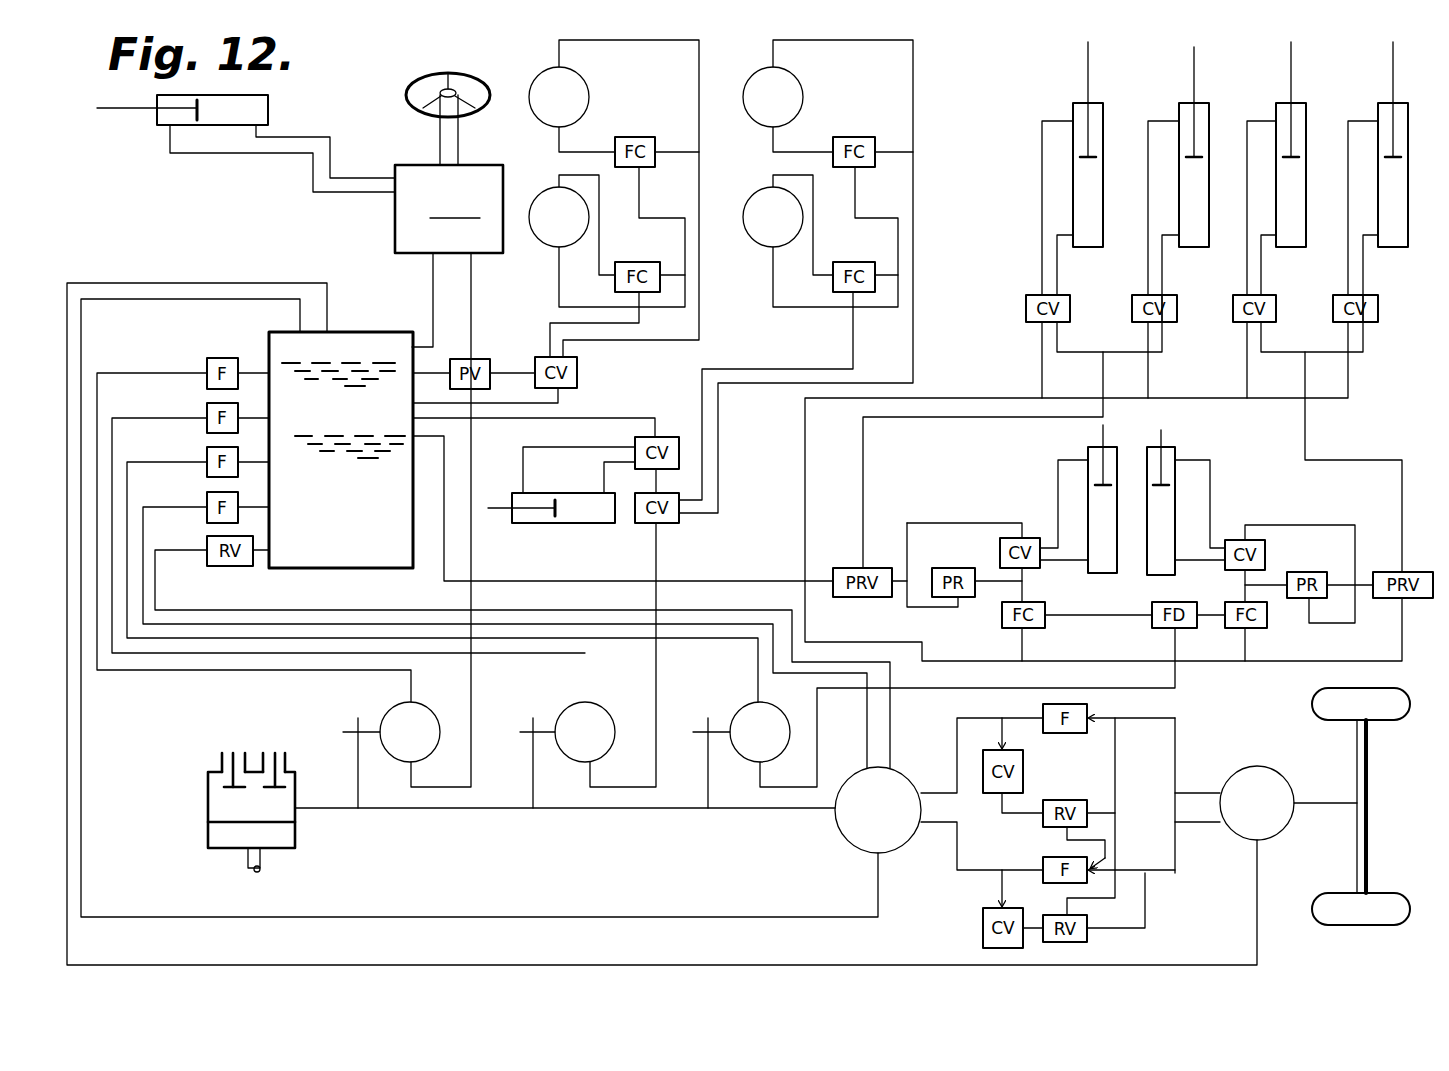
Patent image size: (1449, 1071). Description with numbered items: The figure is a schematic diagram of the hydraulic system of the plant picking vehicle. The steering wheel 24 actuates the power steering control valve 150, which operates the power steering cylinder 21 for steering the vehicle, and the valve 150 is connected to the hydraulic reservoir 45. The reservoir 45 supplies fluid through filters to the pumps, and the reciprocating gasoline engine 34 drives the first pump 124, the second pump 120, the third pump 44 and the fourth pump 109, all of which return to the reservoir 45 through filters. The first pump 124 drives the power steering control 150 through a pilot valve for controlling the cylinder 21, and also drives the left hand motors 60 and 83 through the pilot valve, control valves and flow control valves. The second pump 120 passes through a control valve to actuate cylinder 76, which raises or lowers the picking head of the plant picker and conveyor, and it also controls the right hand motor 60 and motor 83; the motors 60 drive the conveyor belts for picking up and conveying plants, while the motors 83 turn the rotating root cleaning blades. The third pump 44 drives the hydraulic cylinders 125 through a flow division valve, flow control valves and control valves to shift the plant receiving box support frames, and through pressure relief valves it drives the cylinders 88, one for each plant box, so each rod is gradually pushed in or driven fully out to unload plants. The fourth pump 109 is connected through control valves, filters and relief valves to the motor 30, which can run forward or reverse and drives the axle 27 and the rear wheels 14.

The power steering cylinder 21 is at (268, 103).
The steering wheel 24 is at (465, 73).
The power steering control valve 150 is at (449, 209).
The motor 60 is at (588, 100).
The motor 83 is at (556, 243).
The cylinder 88 is at (1090, 247).
The hydraulic reservoir 45 is at (323, 557).
The cylinder 76 is at (563, 523).
The hydraulic cylinder 125 is at (1090, 575).
The gasoline engine 34 is at (215, 788).
The pump P1 124 is at (415, 758).
The pump P2 120 is at (590, 758).
The pump P3 44 is at (768, 758).
The pump 109 is at (885, 845).
The motor 30 is at (1268, 777).
The axle 27 is at (1369, 865).
The rear wheels 14 is at (1383, 712).